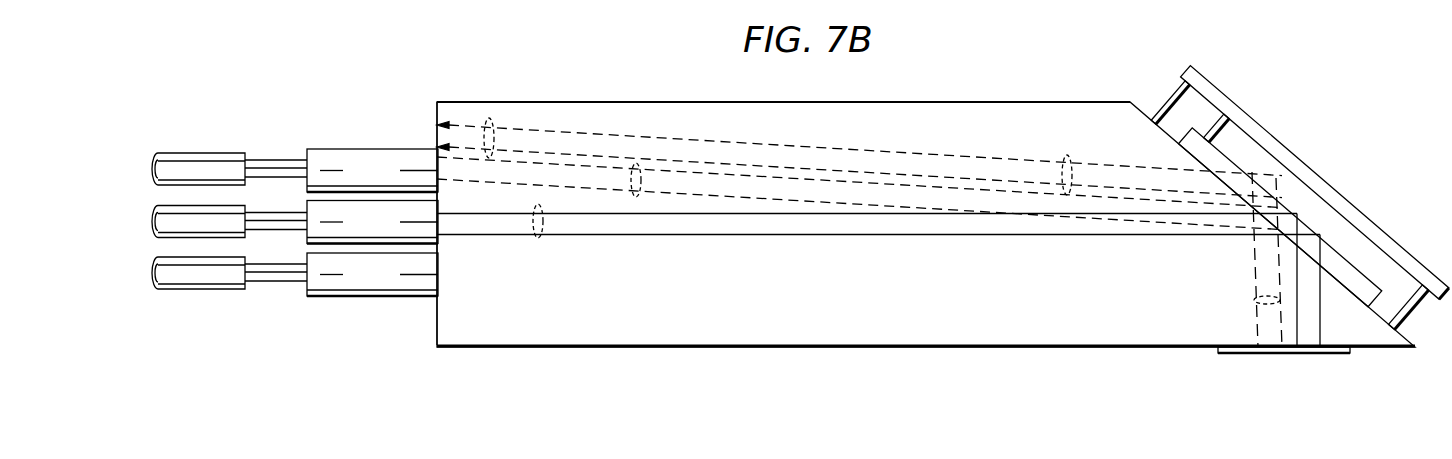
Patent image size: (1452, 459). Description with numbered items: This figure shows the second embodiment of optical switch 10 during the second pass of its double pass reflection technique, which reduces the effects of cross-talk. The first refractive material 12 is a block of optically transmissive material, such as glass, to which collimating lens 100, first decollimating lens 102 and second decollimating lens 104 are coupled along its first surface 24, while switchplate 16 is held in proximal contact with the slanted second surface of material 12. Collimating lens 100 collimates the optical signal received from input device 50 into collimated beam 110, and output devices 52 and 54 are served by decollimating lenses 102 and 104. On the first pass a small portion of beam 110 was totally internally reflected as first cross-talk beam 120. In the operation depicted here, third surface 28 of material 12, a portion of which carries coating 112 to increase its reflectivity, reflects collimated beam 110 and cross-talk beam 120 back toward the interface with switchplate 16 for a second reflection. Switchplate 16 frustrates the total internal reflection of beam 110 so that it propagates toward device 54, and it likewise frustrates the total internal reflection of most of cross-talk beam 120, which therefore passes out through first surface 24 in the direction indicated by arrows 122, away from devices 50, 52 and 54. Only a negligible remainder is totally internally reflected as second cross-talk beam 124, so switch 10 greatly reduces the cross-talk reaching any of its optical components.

The optical switch 10 is at (591, 67).
The first refractive material 12 is at (456, 322).
The switchplate 16 is at (1358, 252).
The first surface 24 is at (437, 135).
The third surface 28 is at (1110, 348).
The input device 50 is at (277, 283).
The output device 52 is at (260, 160).
The output device 54 is at (277, 213).
The collimating lens 100 is at (352, 285).
The first decollimating lens 102 is at (352, 181).
The second decollimating lens 104 is at (352, 232).
The collimated beam 110 is at (538, 242).
The coating 112 is at (1333, 366).
The first cross-talk beam 120 is at (1068, 154).
The arrows 122 is at (490, 118).
The second cross-talk beam 124 is at (636, 200).